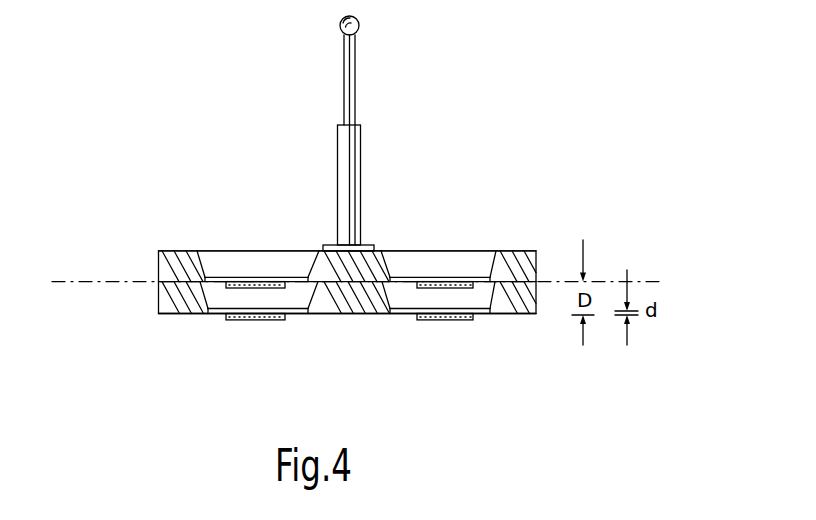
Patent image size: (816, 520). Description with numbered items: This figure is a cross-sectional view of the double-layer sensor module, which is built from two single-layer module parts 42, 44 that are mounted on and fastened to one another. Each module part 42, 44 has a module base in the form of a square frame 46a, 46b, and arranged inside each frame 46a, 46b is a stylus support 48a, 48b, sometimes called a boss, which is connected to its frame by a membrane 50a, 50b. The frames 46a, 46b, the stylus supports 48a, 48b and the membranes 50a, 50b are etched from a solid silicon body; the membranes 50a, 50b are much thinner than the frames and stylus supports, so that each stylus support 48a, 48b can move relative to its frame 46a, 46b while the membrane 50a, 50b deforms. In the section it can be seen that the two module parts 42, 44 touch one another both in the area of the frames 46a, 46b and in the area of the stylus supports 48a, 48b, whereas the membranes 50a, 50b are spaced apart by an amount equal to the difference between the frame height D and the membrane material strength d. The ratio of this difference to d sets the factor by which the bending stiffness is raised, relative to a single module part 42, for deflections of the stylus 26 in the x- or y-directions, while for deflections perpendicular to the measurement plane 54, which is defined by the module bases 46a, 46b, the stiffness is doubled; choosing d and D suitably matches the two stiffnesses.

The stylus 26 is at (353, 143).
The first module part 42 is at (514, 252).
The second module part 44 is at (508, 324).
The module base (frame) 46a is at (172, 258).
The module base (frame) 46b is at (172, 314).
The stylus support 48a is at (311, 254).
The stylus support 48b is at (352, 306).
The membrane 50a is at (223, 279).
The membrane 50b is at (297, 314).
The measurement plane 54 is at (88, 282).